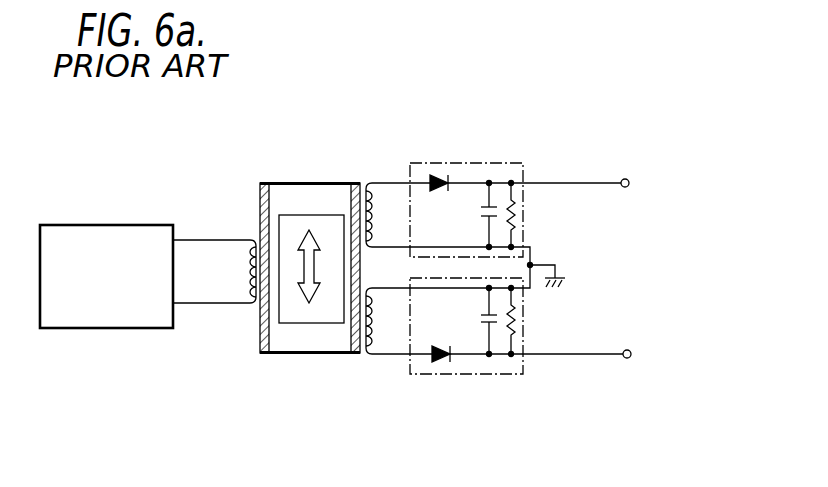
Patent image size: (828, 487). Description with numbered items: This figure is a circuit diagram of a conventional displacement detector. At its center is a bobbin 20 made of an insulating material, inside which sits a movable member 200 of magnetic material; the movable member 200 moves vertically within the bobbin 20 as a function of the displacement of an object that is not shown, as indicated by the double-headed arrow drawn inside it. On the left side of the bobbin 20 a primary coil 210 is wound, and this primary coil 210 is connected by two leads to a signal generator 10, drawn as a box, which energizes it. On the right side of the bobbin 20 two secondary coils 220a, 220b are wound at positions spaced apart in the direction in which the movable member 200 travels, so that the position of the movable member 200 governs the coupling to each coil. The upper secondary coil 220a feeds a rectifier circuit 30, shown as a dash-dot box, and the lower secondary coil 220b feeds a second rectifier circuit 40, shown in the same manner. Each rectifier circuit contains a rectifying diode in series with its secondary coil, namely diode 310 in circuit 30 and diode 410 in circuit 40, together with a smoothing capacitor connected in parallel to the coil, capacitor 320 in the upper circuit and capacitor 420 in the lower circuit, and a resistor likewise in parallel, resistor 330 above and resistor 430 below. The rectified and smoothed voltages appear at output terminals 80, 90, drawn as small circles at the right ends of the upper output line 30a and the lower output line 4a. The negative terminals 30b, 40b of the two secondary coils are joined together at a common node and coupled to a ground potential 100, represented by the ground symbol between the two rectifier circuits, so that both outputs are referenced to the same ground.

The signal generator 10 is at (112, 319).
The bobbin 20 is at (262, 340).
The movable member 200 is at (293, 219).
The primary coil 210 is at (247, 283).
The secondary coil 220a is at (377, 191).
The secondary coil 220b is at (382, 355).
The rectifier circuit 30 is at (507, 162).
The upper output line 30a is at (548, 183).
The negative terminal 30b is at (528, 247).
The rectifying diode 310 is at (438, 179).
The smoothing capacitor 320 is at (480, 212).
The resistor 330 is at (518, 216).
The rectifier circuit 40 is at (507, 375).
The negative terminal 40b is at (530, 290).
The lower output line 4a is at (576, 357).
The rectifying diode 410 is at (441, 363).
The smoothing capacitor 420 is at (481, 320).
The resistor 430 is at (518, 322).
The output terminal 80 is at (625, 178).
The output terminal 90 is at (629, 349).
The ground potential 100 is at (556, 266).